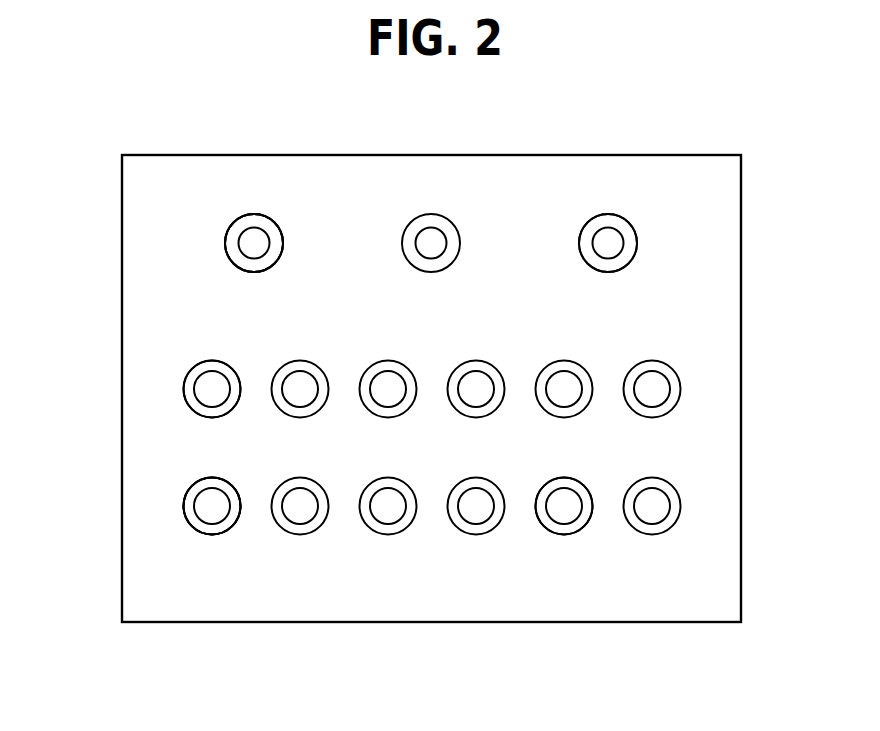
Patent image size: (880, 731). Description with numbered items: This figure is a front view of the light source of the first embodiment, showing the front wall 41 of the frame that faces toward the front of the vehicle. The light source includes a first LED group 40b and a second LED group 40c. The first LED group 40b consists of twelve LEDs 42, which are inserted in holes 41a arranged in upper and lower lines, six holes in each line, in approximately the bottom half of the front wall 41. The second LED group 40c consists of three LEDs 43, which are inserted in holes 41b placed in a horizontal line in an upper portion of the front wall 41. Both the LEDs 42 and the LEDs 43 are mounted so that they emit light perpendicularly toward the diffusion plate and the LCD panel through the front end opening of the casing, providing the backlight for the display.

The front wall 41 is at (710, 583).
The holes 41a is at (190, 400).
The holes 41b is at (270, 223).
The LEDs 42 is at (207, 389).
The LEDs 43 is at (254, 243).
The first LED group 40b is at (206, 543).
The second LED group 40c is at (228, 218).